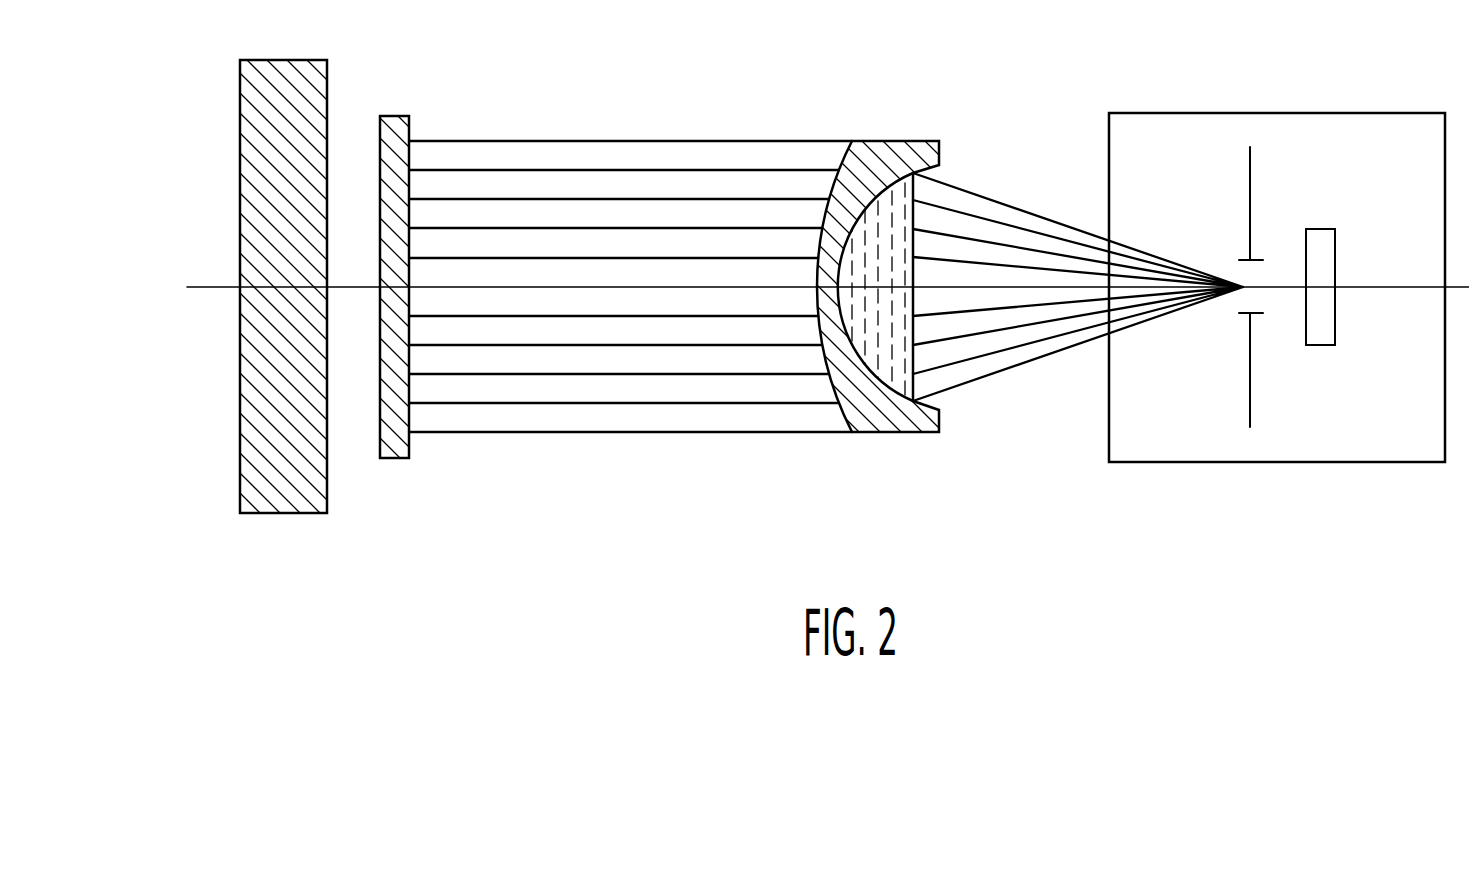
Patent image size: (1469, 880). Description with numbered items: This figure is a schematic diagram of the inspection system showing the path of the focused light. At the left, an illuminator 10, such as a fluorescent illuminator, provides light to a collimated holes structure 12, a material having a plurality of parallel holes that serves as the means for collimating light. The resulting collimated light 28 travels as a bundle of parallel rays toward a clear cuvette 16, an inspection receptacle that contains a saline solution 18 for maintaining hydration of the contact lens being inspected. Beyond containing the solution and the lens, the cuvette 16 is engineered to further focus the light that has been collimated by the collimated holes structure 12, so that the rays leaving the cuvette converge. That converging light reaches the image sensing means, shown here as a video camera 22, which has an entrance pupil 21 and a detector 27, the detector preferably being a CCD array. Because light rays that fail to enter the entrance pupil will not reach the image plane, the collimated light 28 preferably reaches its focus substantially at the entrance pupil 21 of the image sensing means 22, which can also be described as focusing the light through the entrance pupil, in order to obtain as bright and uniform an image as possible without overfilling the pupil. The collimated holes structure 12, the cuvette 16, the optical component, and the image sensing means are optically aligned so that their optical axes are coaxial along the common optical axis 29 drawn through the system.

The illuminator 10 is at (327, 508).
The collimated holes structure 12 is at (393, 116).
The cuvette 16 is at (887, 432).
The saline solution 18 is at (897, 203).
The entrance pupil 21 is at (1252, 258).
The video camera 22 is at (1218, 462).
The detector 27 is at (1321, 228).
The collimated light 28 is at (645, 228).
The optical axis 29 is at (628, 287).